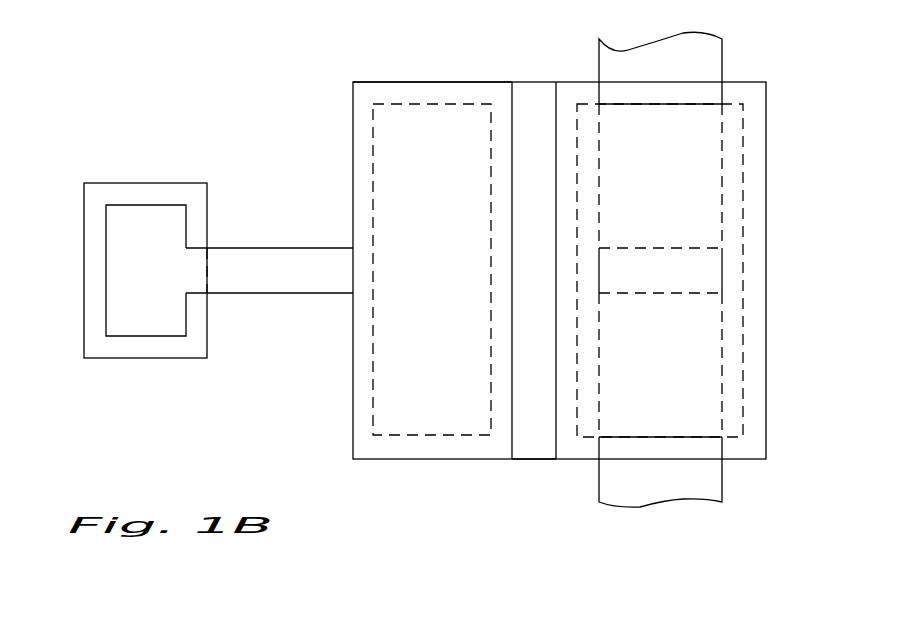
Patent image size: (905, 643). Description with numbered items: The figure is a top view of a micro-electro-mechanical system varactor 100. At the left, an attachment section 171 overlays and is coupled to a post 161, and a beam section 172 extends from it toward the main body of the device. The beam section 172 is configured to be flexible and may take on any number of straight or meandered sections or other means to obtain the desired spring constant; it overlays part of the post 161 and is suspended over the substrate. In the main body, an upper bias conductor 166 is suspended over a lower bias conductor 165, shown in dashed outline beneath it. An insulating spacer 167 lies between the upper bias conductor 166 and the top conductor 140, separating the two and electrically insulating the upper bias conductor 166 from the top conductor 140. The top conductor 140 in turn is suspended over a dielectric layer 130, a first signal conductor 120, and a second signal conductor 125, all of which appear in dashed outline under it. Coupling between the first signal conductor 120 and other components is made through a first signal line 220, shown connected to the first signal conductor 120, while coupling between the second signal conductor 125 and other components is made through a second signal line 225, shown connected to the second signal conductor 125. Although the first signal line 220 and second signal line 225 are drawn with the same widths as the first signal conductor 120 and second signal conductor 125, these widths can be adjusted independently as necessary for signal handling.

The micro-electro-mechanical system varactor 100 is at (201, 460).
The first signal conductor 120 is at (722, 323).
The second signal conductor 125 is at (722, 163).
The dielectric layer 130 is at (743, 240).
The top conductor 140 is at (767, 382).
The post 161 is at (127, 360).
The lower bias conductor 165 is at (360, 385).
The upper bias conductor 166 is at (512, 75).
The insulating spacer 167 is at (528, 440).
The attachment section 171 is at (186, 177).
The beam section 172 is at (345, 177).
The first signal line 220 is at (723, 483).
The second signal line 225 is at (705, 65).